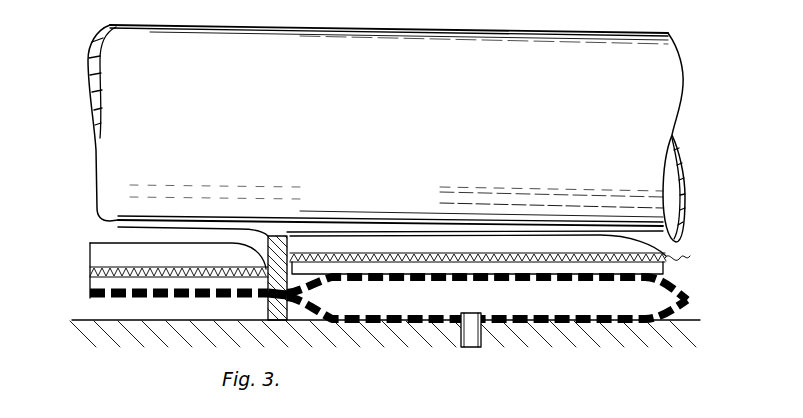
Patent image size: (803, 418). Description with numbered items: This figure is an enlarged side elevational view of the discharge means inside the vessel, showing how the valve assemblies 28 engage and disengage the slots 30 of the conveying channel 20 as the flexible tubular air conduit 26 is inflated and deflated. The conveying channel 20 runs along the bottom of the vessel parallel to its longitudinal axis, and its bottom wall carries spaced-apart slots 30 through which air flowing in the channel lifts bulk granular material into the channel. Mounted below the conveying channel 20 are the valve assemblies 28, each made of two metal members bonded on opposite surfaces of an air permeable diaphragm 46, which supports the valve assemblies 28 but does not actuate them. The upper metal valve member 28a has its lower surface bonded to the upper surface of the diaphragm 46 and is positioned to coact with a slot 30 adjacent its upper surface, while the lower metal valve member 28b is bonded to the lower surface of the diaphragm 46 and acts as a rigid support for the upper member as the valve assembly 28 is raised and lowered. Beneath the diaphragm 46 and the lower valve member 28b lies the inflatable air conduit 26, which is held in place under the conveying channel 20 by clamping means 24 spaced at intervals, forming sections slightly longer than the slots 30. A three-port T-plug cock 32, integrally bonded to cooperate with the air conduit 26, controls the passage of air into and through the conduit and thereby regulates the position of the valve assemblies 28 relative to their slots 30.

The conveying channel 20 is at (667, 88).
The clamping means 24 is at (282, 246).
The air conduit 26 is at (142, 293).
The valve assembly 28 is at (669, 249).
The upper metal valve member 28a is at (96, 248).
The lower metal valve member 28b is at (90, 273).
The slot 30 is at (118, 222).
The three-port T-plug cock 32 is at (474, 322).
The air permeable diaphragm 46 is at (335, 262).